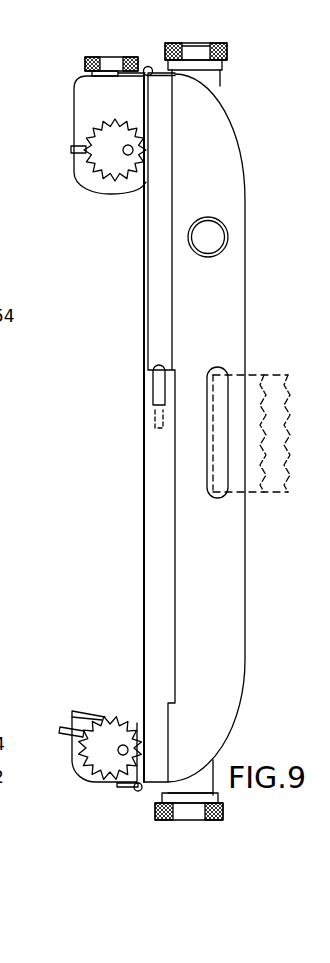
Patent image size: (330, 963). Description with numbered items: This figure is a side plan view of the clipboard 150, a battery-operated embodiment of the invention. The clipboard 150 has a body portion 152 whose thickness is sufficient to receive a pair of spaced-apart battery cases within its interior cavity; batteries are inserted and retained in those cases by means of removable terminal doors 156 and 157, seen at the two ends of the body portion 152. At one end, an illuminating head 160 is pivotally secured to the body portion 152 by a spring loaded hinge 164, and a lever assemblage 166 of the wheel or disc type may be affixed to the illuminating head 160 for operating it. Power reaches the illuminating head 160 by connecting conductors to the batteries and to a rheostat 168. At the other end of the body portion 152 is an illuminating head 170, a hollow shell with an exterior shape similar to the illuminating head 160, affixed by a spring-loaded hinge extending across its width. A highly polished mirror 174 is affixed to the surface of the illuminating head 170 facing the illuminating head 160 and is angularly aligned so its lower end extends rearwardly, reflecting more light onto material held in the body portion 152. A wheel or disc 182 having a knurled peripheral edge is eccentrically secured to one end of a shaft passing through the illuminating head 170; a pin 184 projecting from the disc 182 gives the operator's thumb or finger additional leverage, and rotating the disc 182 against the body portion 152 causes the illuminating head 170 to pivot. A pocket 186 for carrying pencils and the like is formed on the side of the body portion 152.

The clipboard 150 is at (248, 116).
The body portion 152 is at (230, 267).
The terminal door 156 is at (197, 43).
The terminal door 157 is at (157, 810).
The illuminating head 160 is at (82, 112).
The spring loaded hinge 164 is at (148, 66).
The lever assemblage 166 is at (93, 157).
The rheostat 168 is at (215, 237).
The illuminating head 170 is at (72, 720).
The mirror 174 is at (85, 718).
The wheel or disc 182 is at (97, 762).
The pin 184 is at (62, 728).
The pocket 186 is at (152, 570).